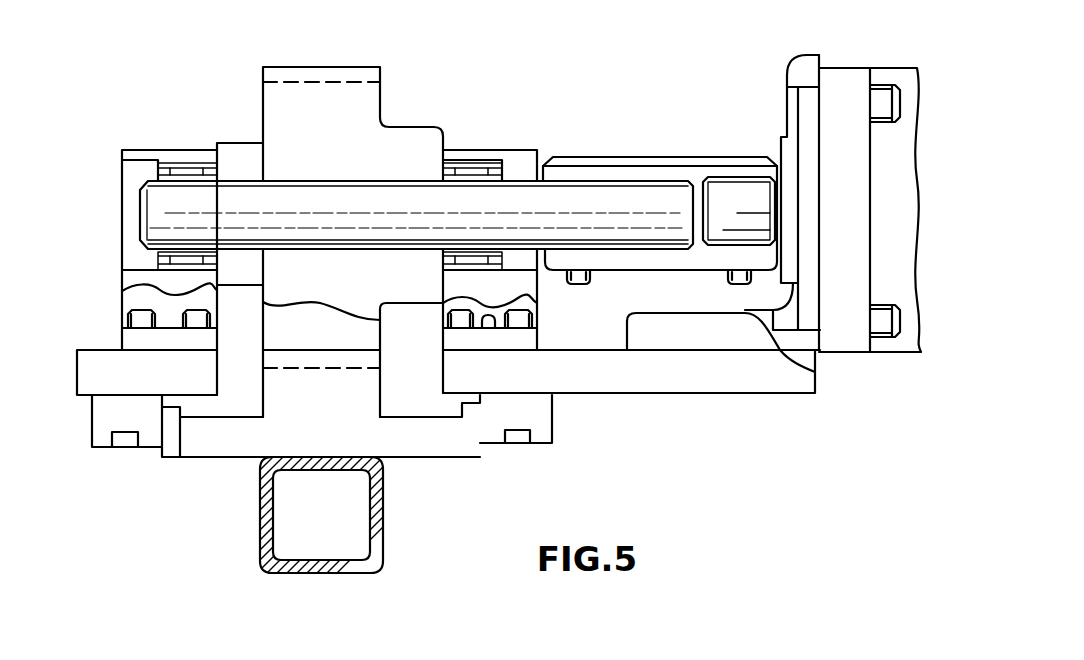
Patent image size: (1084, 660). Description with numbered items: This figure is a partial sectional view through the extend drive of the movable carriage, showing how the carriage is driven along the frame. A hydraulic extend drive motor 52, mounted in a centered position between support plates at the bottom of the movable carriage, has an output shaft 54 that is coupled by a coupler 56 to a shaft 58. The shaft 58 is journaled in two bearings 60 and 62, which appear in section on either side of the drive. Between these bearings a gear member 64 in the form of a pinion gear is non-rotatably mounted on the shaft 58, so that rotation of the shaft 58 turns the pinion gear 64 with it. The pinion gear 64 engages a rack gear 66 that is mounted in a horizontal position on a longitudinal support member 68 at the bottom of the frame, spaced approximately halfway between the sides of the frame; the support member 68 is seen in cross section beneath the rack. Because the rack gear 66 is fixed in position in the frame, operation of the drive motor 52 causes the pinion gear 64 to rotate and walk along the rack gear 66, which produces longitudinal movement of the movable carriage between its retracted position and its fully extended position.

The hydraulic extend drive motor 52 is at (855, 78).
The output shaft 54 is at (743, 187).
The coupler 56 is at (651, 157).
The shaft 58 is at (560, 197).
The bearing 60 is at (495, 150).
The bearing 62 is at (167, 148).
The gear member 64 is at (372, 108).
The rack gear 66 is at (283, 407).
The longitudinal support member 68 is at (383, 520).